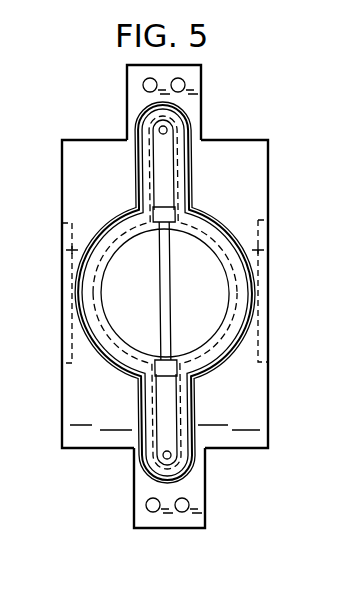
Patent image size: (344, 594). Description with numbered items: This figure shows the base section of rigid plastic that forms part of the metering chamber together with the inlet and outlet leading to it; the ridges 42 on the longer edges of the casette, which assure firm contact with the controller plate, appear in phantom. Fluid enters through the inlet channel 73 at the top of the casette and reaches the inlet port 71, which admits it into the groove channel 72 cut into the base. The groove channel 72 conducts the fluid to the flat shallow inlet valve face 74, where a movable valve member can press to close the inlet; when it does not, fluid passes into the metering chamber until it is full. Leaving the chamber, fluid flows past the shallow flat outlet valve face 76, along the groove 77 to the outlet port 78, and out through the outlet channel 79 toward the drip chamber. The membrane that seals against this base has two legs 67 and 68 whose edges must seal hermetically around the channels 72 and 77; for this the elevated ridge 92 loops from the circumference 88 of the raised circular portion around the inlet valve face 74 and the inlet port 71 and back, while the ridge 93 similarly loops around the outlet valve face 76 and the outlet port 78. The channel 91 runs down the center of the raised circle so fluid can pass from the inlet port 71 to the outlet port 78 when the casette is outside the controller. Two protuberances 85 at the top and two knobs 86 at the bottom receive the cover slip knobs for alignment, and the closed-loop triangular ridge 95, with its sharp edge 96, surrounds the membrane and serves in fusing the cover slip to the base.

The ridges 42 is at (62, 242).
The leg of membrane 67 is at (178, 161).
The leg of membrane 68 is at (201, 406).
The inlet port 71 is at (173, 125).
The groove channel 72 is at (168, 177).
The inlet channel 73 is at (193, 73).
The inlet valve face 74 is at (180, 232).
The outlet valve face 76 is at (173, 349).
The groove 77 is at (163, 405).
The outlet port 78 is at (160, 458).
The outlet channel 79 is at (197, 487).
The protuberances 85 is at (176, 83).
The knobs 86 is at (172, 512).
The circumference of raised circular portion 88 is at (215, 255).
The channel 91 is at (163, 303).
The elevated ridge 92 is at (155, 158).
The ridge 93 is at (145, 392).
The ridge 95 is at (112, 222).
The sharp edge 96 is at (133, 212).